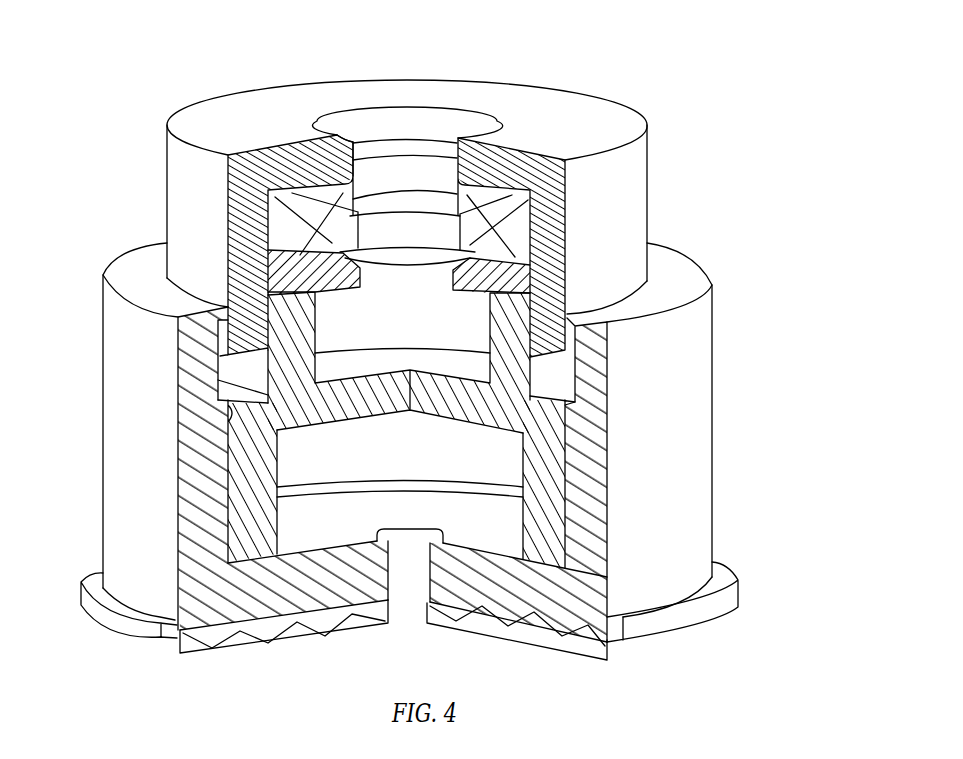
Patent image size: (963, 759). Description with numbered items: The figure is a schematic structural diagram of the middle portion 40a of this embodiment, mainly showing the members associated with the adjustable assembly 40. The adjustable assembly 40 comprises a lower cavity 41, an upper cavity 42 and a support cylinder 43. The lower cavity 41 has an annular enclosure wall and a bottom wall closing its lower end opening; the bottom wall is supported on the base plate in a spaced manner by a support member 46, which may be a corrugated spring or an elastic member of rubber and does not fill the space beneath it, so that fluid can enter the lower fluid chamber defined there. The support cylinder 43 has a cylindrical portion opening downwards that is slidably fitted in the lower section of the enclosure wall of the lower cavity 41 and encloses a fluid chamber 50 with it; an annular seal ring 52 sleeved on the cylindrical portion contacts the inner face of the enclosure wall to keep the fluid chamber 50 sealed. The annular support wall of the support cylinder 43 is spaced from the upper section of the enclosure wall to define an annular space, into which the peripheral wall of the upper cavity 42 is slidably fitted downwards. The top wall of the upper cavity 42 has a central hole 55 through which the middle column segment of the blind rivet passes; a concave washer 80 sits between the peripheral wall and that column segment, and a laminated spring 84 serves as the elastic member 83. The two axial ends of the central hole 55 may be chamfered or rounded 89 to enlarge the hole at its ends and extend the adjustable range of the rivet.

The adjustable assembly 40 is at (148, 167).
The middle portion 40a is at (636, 80).
The lower cavity 41 is at (120, 277).
The upper cavity 42 is at (187, 118).
The support cylinder 43 is at (522, 378).
The support member 46 is at (715, 585).
The fluid chamber 50 is at (507, 532).
The annular seal ring 52 is at (580, 418).
The central hole 55 is at (398, 130).
The concave washer 80 is at (565, 240).
The elastic member 83 is at (427, 143).
The laminated spring 84 is at (547, 173).
The chamfered or rounded ends 89 is at (340, 133).